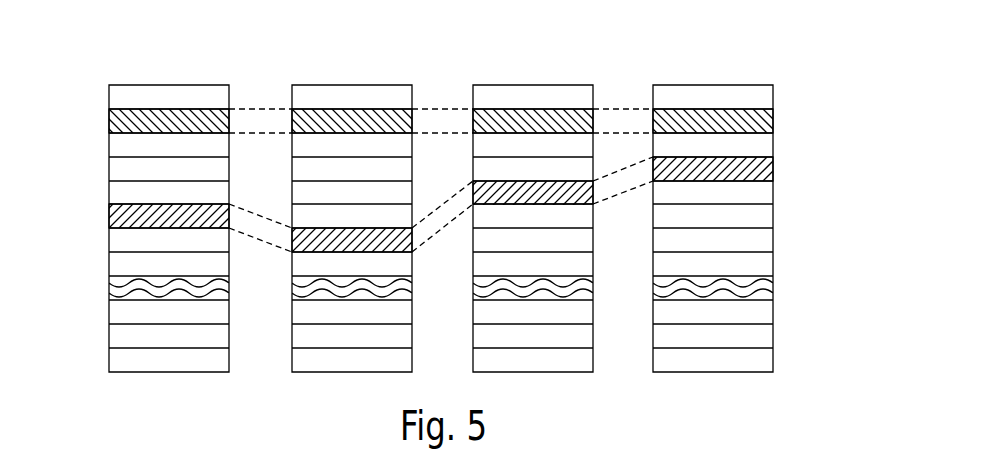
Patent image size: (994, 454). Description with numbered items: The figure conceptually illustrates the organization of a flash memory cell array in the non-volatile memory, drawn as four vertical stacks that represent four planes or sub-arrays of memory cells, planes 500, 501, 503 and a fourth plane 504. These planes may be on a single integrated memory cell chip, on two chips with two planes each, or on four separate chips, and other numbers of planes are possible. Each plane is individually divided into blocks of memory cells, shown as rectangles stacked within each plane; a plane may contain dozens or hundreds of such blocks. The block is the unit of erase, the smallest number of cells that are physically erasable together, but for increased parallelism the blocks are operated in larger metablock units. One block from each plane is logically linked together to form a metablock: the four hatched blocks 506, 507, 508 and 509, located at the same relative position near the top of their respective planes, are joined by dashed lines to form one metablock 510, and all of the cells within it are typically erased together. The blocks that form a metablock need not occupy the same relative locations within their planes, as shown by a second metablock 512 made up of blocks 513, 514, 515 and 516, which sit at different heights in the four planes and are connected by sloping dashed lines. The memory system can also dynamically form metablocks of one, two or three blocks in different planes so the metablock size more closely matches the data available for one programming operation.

The plane 500 is at (174, 68).
The plane 501 is at (358, 66).
The plane 503 is at (527, 66).
The fourth memory stack 504 is at (726, 66).
The block 506 is at (150, 118).
The block 507 is at (330, 118).
The block 508 is at (512, 118).
The block 509 is at (737, 118).
The metablock 510 is at (633, 101).
The second metablock 512 is at (622, 158).
The block 513 is at (147, 218).
The block 514 is at (330, 233).
The block 515 is at (523, 193).
The block 516 is at (742, 165).